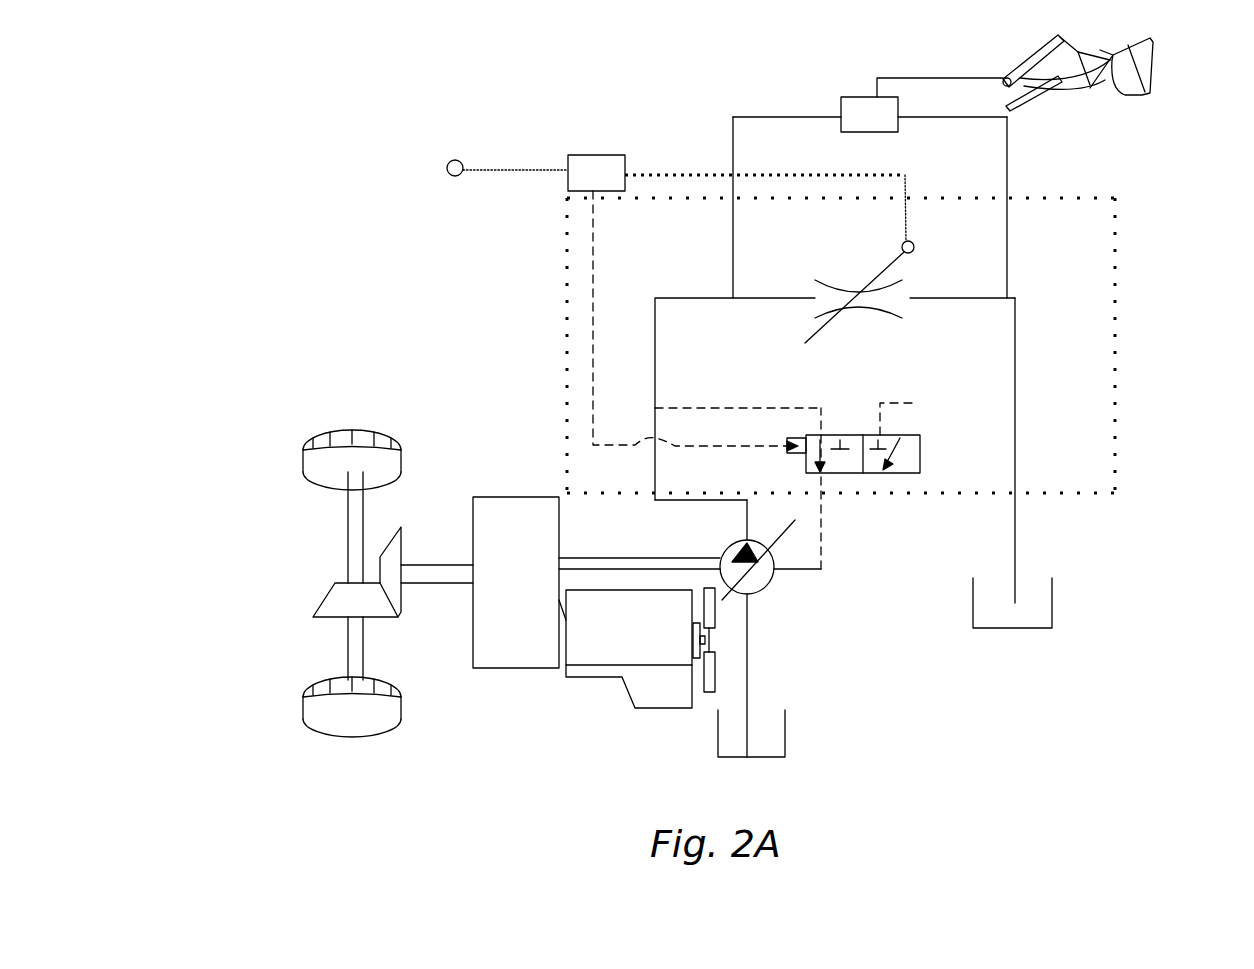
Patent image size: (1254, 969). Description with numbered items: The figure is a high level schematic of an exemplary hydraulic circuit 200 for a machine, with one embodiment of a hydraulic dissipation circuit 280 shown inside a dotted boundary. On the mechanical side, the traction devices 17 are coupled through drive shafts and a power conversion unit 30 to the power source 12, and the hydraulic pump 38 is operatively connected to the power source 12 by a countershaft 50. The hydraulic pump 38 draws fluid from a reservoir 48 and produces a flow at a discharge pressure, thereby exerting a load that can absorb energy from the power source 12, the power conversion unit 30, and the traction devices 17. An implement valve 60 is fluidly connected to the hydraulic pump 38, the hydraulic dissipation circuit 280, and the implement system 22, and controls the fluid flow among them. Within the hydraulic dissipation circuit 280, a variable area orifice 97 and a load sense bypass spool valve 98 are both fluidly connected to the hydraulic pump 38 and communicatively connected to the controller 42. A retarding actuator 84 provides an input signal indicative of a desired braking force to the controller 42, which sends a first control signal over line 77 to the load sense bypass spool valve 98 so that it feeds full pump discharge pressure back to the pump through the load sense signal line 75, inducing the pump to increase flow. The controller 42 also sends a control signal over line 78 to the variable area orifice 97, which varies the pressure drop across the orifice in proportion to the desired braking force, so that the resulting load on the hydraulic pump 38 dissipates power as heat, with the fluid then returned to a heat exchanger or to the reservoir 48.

The hydraulic circuit 200 is at (278, 155).
The hydraulic dissipation circuit 280 is at (1080, 500).
The traction devices 17 is at (303, 693).
The power conversion unit 30 is at (500, 497).
The power source 12 is at (644, 640).
The countershaft 50 is at (562, 612).
The hydraulic pump 38 is at (755, 595).
The reservoir 48 is at (760, 757).
The load sense signal line 75 is at (821, 520).
The variable area orifice 97 is at (852, 317).
The load sense bypass spool valve 98 is at (840, 435).
The line 77 is at (593, 247).
The line 78 is at (780, 177).
The controller 42 is at (602, 155).
The retarding actuator 84 is at (447, 170).
The implement valve 60 is at (842, 98).
The implement system 22 is at (1150, 70).